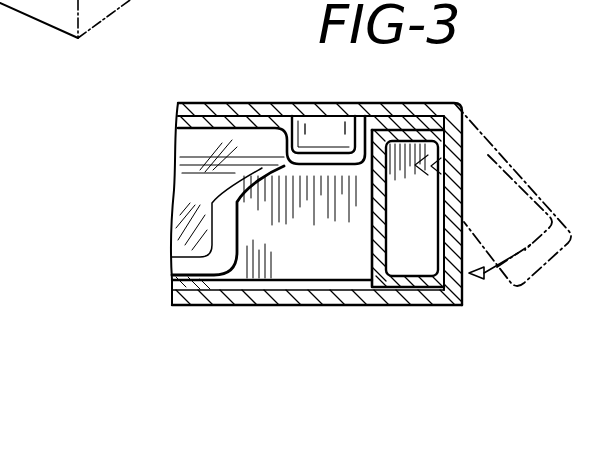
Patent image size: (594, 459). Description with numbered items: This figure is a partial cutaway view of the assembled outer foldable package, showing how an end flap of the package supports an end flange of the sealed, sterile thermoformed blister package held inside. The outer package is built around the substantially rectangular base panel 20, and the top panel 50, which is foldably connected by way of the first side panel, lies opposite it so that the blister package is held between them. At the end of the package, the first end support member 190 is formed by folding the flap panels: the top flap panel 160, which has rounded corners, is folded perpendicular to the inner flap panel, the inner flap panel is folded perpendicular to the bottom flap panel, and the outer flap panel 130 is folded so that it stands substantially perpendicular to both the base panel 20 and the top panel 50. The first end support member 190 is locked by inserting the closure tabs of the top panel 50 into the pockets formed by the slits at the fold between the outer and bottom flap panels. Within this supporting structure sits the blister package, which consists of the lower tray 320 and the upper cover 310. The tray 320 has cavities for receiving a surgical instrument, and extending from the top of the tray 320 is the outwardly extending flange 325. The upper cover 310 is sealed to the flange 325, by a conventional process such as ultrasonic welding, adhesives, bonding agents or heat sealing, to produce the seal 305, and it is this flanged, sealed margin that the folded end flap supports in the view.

The base panel 20 is at (244, 104).
The top panel 50 is at (227, 306).
The outer flap panel 130 is at (472, 118).
The top flap panel 160 is at (466, 122).
The first end support member 190 is at (473, 293).
The seal 305 is at (317, 168).
The upper cover 310 is at (198, 128).
The lower tray 320 is at (208, 249).
The outwardly extending flange 325 is at (412, 113).